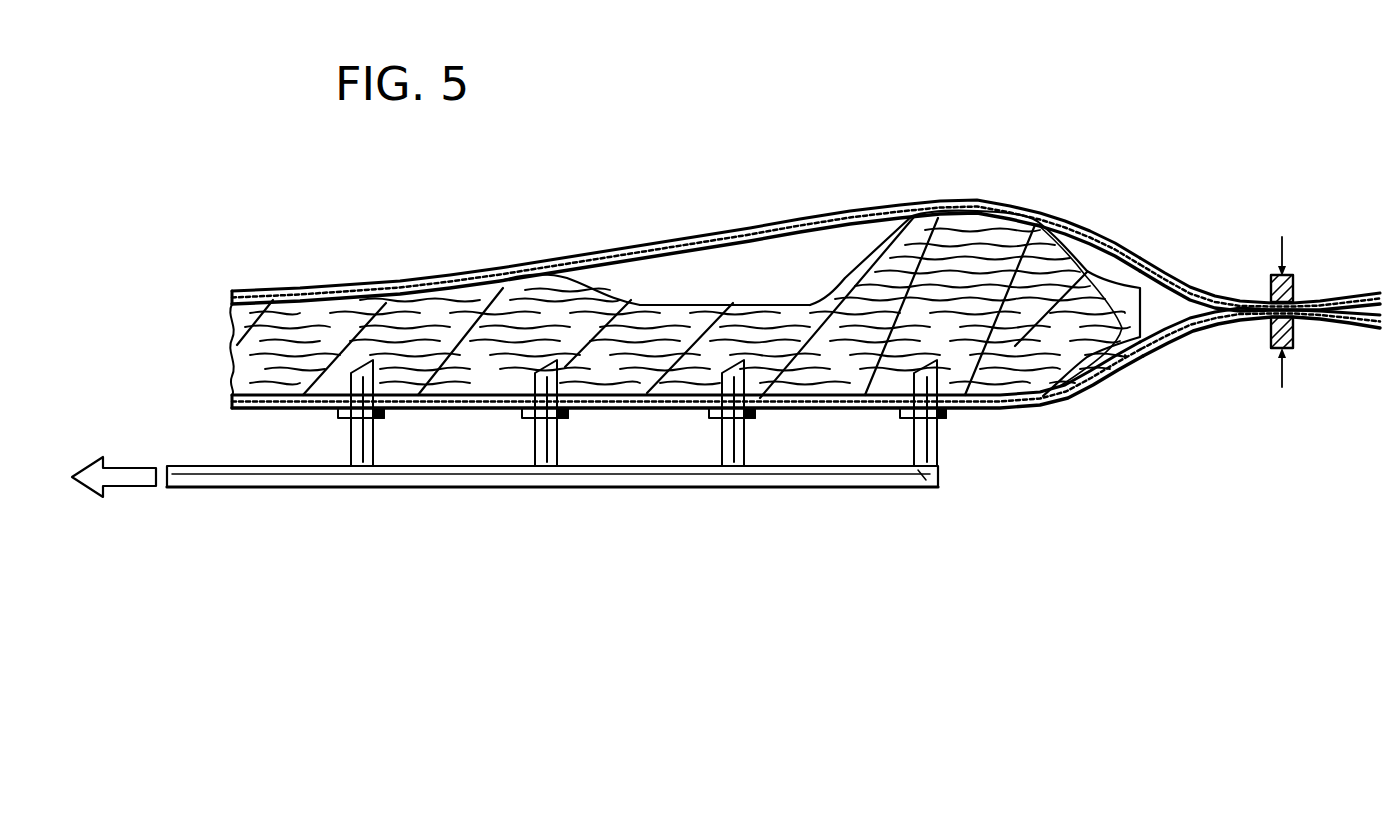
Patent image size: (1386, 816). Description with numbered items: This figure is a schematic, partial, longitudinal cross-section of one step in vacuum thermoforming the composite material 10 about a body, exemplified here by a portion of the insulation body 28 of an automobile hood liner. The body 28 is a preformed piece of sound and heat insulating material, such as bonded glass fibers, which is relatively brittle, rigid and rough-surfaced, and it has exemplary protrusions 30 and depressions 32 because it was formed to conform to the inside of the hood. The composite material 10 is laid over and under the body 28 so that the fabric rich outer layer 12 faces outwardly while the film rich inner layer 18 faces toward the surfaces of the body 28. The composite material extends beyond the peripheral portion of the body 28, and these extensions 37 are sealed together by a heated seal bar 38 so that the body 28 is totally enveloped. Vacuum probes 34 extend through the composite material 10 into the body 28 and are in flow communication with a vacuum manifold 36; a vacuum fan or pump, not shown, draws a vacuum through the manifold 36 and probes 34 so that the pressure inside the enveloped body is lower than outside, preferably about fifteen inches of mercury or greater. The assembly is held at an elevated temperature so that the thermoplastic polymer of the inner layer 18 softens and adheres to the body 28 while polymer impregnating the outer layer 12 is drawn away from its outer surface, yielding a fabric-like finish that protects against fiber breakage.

The composite material 10 is at (658, 325).
The fabric rich outer layer 12 is at (265, 291).
The film rich inner layer 18 is at (653, 307).
The insulation body 28 is at (1003, 333).
The protrusions 30 is at (568, 276).
The depressions 32 is at (720, 305).
The vacuum probes 34 is at (533, 437).
The vacuum manifold 36 is at (283, 489).
The extensions 37 is at (1186, 283).
The heated seal bar 38 is at (1296, 280).